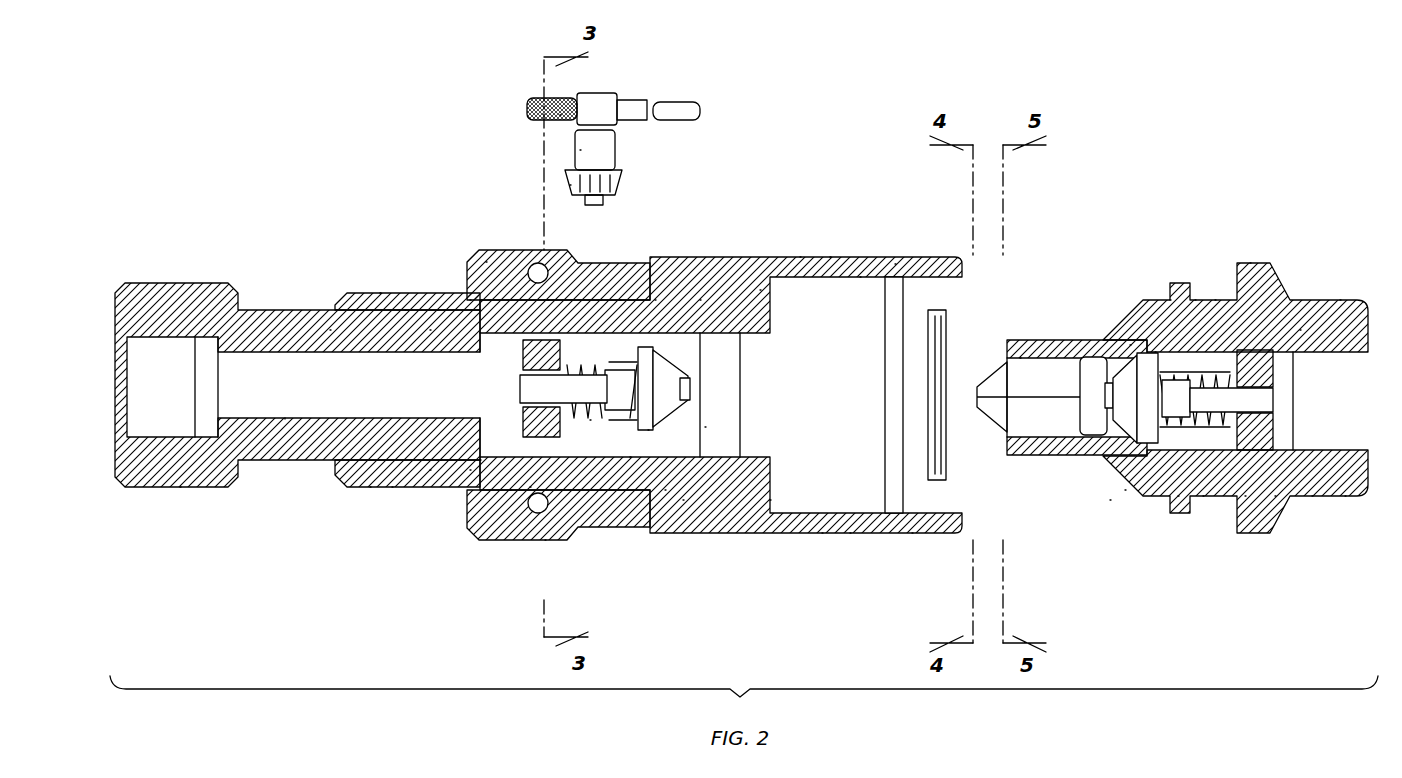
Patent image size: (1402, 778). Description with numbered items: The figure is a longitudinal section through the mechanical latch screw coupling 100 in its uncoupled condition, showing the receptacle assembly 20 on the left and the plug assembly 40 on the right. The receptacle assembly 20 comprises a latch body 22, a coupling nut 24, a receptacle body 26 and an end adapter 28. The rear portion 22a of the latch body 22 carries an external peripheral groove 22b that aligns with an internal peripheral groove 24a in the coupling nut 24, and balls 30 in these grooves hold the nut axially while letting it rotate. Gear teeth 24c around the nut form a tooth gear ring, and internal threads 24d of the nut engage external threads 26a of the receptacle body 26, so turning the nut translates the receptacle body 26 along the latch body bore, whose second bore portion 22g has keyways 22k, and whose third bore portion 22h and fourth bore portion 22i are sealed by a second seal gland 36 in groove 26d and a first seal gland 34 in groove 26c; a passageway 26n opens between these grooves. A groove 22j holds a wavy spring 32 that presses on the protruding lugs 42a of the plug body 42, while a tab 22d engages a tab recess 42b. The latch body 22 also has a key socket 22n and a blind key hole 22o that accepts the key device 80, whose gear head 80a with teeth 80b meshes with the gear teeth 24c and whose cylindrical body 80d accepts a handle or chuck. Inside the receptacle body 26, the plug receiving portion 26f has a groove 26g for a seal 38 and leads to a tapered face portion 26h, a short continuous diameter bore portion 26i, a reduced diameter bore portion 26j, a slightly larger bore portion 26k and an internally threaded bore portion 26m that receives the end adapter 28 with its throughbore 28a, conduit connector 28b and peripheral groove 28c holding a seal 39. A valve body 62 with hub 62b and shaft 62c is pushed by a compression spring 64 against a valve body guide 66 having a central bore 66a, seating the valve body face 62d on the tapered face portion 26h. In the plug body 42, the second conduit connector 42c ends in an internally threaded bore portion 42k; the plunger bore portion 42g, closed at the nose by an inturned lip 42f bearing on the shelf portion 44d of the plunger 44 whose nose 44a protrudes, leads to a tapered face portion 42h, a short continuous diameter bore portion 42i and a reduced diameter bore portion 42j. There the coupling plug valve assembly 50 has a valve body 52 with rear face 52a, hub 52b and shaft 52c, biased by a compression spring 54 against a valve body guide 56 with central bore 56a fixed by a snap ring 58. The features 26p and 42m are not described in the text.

The mechanical latch screw coupling 100 is at (412, 200).
The receptacle assembly 20 is at (796, 250).
The latch body 22 is at (790, 255).
The rear portion of the latch body 22a is at (480, 462).
The external peripheral groove 22b is at (510, 492).
The tab 22d is at (912, 535).
The second bore portion 22g is at (830, 255).
The third bore portion 22h is at (760, 288).
The fourth bore portion 22i is at (470, 472).
The groove 22j is at (895, 262).
The keyways 22k is at (850, 535).
The key socket 22n is at (620, 298).
The blind key hole 22o is at (600, 298).
The coupling nut 24 is at (340, 298).
The internal peripheral groove 24a is at (530, 489).
The gear teeth 24c is at (548, 298).
The internal threads 24d is at (392, 489).
The receptacle body 26 is at (672, 262).
The external threads 26a is at (370, 489).
The groove 26c is at (486, 260).
The groove 26d is at (665, 492).
The plug receiving portion 26f is at (860, 275).
The groove 26g is at (770, 502).
The tapered face portion 26h is at (655, 298).
The short continuous diameter bore portion 26i is at (630, 459).
The reduced diameter bore portion 26j is at (470, 298).
The slightly larger diameter bore portion 26k is at (380, 291).
The internally threaded bore portion 26m is at (330, 330).
The passageway 26n is at (700, 298).
The sleeve lip 26p is at (822, 535).
The end adapter 28 is at (195, 283).
The throughbore 28a is at (285, 420).
The conduit connector 28b is at (180, 489).
The peripheral groove 28c is at (407, 308).
The balls 30 is at (545, 542).
The wavy spring 32 is at (932, 275).
The first seal gland 34 is at (535, 263).
The second seal gland 36 is at (683, 502).
The seal 38 is at (775, 515).
The seal 39 is at (438, 308).
The plug assembly 40 is at (1258, 262).
The plug body 42 is at (1292, 298).
The protruding lugs 42a is at (1170, 298).
The tab recess 42b is at (1195, 298).
The second conduit connector 42c is at (1340, 298).
The inturned lip 42f is at (1020, 356).
The plunger bore portion 42g is at (1125, 492).
The tapered face portion 42h is at (1130, 343).
The short continuous diameter bore portion 42i is at (1155, 350).
The reduced diameter bore portion 42j is at (1215, 298).
The internally threaded bore portion 42k is at (1345, 498).
The body taper 42m is at (1110, 500).
The plunger 44 is at (1077, 397).
The nose 44a is at (1000, 360).
The shelf portion 44d is at (1050, 338).
The coupling plug valve assembly 50 is at (1112, 352).
The valve body 52 is at (1217, 400).
The rear face 52a is at (1178, 498).
The valve body hub 52b is at (1203, 498).
The shaft 52c is at (1300, 328).
The compression spring 54 is at (1215, 498).
The valve body guide 56 is at (1245, 498).
The central bore 56a is at (1312, 498).
The snap ring 58 is at (1275, 498).
The valve body 62 is at (740, 300).
The valve body hub 62b is at (648, 432).
The shaft 62c is at (590, 422).
The valve body face 62d is at (705, 429).
The compression spring 64 is at (560, 437).
The valve body guide 66 is at (440, 462).
The central bore 66a is at (430, 472).
The key device 80 is at (620, 155).
The gear head 80a is at (580, 150).
The teeth 80b is at (570, 185).
The cylindrical body 80d is at (560, 118).